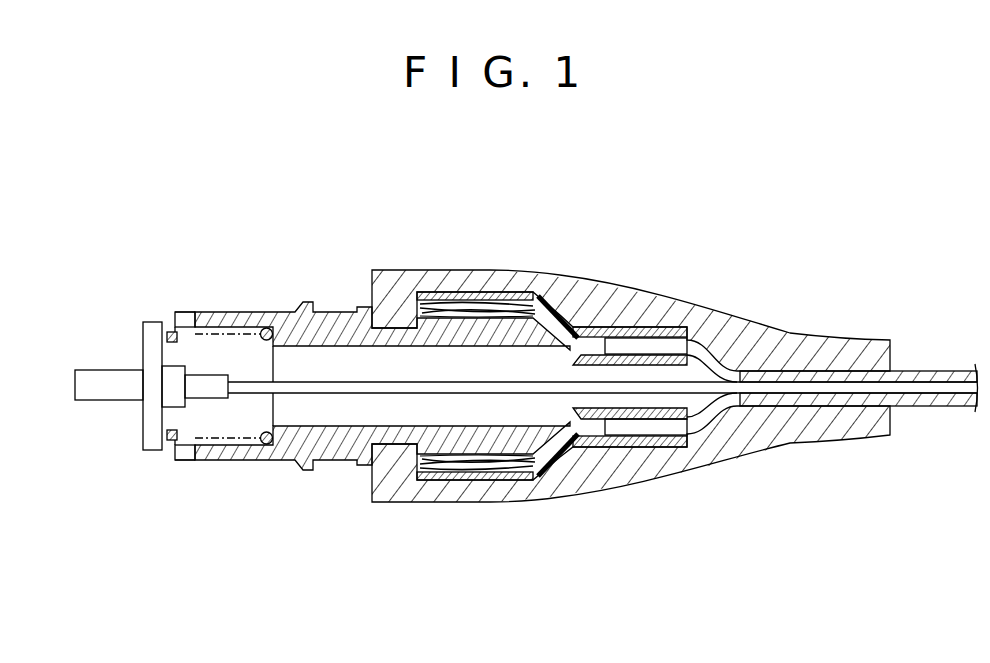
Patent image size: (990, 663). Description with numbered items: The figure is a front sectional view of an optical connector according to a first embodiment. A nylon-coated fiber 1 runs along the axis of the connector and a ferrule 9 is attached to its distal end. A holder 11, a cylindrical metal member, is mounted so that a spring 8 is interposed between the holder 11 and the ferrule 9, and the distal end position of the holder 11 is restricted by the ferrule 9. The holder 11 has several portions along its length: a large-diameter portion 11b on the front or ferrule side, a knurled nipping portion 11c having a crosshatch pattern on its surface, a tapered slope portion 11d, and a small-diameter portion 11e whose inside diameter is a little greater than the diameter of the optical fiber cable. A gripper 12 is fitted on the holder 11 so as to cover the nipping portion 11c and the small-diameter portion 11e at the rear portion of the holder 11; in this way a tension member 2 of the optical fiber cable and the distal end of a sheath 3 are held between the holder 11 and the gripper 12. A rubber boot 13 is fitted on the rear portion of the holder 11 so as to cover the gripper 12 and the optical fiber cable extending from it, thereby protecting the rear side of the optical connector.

The nylon-coated fiber 1 is at (332, 382).
The tension member 2 is at (466, 302).
The sheath 3 is at (605, 340).
The spring 8 is at (187, 452).
The ferrule 9 is at (104, 396).
The holder 11 is at (261, 300).
The large-diameter portion 11b is at (265, 453).
The knurled nipping portion 11c is at (469, 468).
The tapered slope portion 11d is at (586, 448).
The small-diameter portion 11e is at (638, 352).
The gripper 12 is at (522, 492).
The rubber boot 13 is at (746, 326).